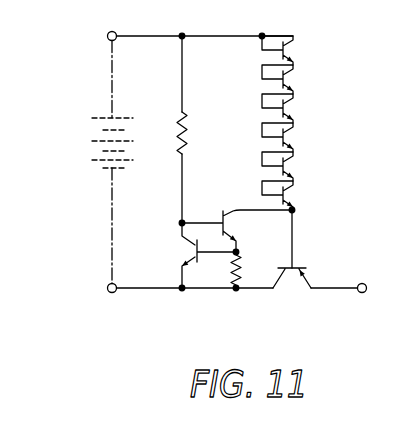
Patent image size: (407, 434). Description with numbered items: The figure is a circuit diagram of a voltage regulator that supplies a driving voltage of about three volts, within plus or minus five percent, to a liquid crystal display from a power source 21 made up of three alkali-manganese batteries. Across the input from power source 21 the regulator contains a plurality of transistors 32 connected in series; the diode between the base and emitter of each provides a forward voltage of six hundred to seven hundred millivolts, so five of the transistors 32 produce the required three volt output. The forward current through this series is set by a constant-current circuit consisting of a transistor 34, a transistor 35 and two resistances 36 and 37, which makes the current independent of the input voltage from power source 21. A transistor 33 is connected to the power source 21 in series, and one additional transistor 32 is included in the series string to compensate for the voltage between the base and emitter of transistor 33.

The power source 21 is at (95, 143).
The transistors 32 is at (295, 109).
The transistor 33 is at (311, 282).
The transistor 34 is at (233, 210).
The transistor 35 is at (196, 252).
The resistance 36 is at (238, 266).
The resistance 37 is at (188, 122).